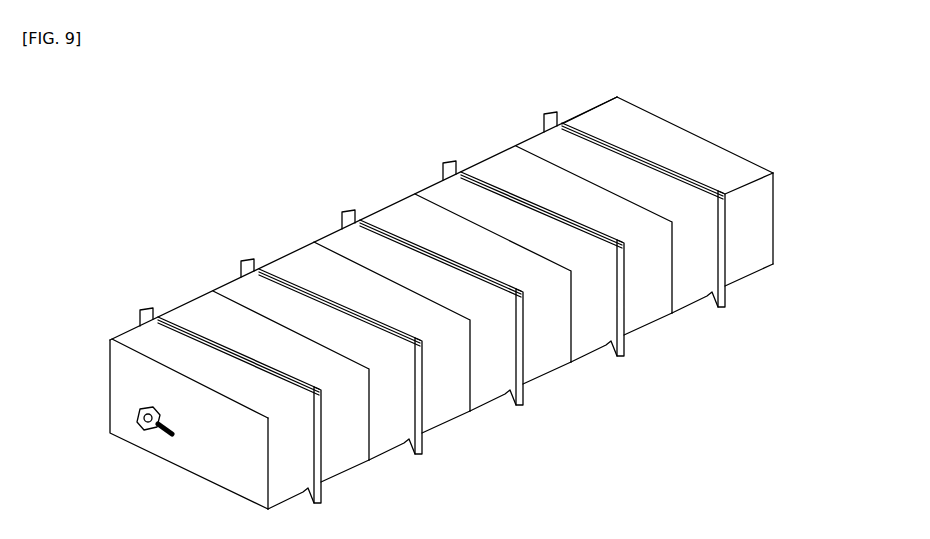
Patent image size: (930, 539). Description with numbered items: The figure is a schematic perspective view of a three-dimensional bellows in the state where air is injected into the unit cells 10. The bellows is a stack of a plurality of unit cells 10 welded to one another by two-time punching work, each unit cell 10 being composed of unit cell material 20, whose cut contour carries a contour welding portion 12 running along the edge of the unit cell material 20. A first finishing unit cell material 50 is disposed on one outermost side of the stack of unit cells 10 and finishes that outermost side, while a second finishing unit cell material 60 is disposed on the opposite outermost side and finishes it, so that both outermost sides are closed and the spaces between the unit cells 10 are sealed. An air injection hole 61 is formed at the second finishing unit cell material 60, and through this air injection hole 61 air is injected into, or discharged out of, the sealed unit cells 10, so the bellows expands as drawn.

The unit cell 10 is at (125, 320).
The contour welding portion 12 is at (623, 350).
The unit cell material 20 is at (593, 330).
The first finishing unit cell material 50 is at (713, 147).
The second finishing unit cell material 60 is at (217, 447).
The air injection hole 61 is at (140, 431).